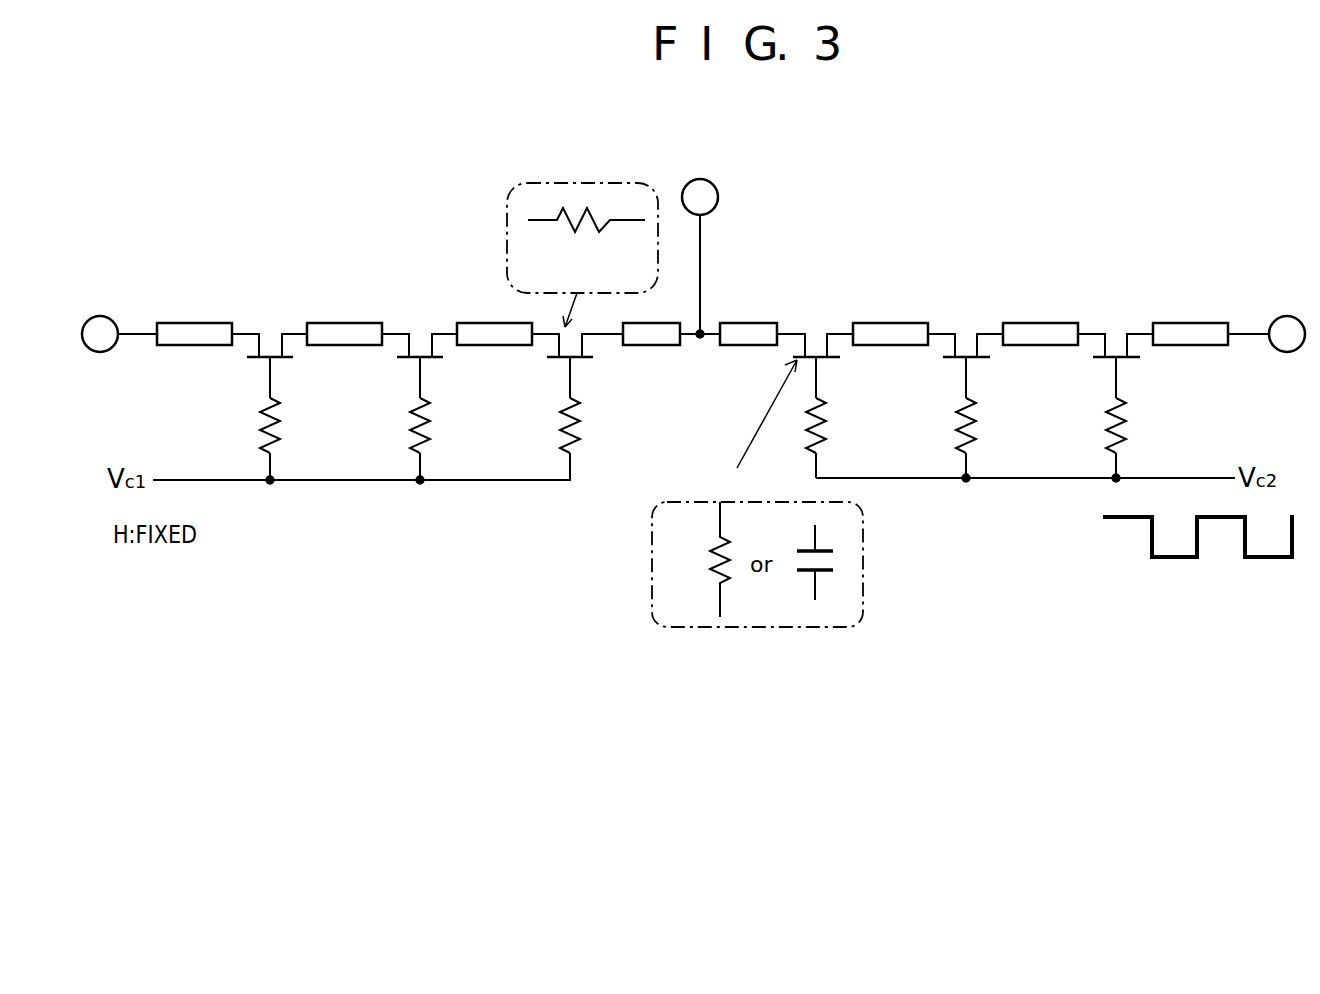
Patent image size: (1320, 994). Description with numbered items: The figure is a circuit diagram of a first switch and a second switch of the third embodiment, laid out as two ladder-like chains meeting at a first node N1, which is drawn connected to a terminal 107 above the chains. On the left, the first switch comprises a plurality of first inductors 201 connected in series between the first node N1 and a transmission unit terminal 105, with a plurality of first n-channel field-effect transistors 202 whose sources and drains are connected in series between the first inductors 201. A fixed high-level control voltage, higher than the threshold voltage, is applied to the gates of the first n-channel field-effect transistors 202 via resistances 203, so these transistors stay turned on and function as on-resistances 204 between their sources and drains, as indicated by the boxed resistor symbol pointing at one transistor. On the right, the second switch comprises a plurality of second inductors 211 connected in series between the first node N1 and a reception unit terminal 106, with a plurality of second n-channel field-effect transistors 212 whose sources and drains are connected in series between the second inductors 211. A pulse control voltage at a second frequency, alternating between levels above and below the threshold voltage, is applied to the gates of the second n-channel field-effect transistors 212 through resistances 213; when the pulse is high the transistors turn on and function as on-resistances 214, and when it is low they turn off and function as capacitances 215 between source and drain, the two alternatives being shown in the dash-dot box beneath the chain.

The transmission unit terminal 105 is at (100, 316).
The reception unit terminal 106 is at (1286, 316).
The control terminal 107 is at (718, 197).
The first node N1 is at (700, 332).
The first inductor 201 is at (192, 323).
The first n-channel field-effect transistor 202 is at (260, 360).
The resistance 203 is at (280, 420).
The on-resistance 204 is at (582, 210).
The second inductor 211 is at (737, 323).
The second n-channel field-effect transistor 212 is at (830, 360).
The resistance 213 is at (825, 430).
The on-resistance 214 is at (712, 567).
The capacitance 215 is at (805, 573).